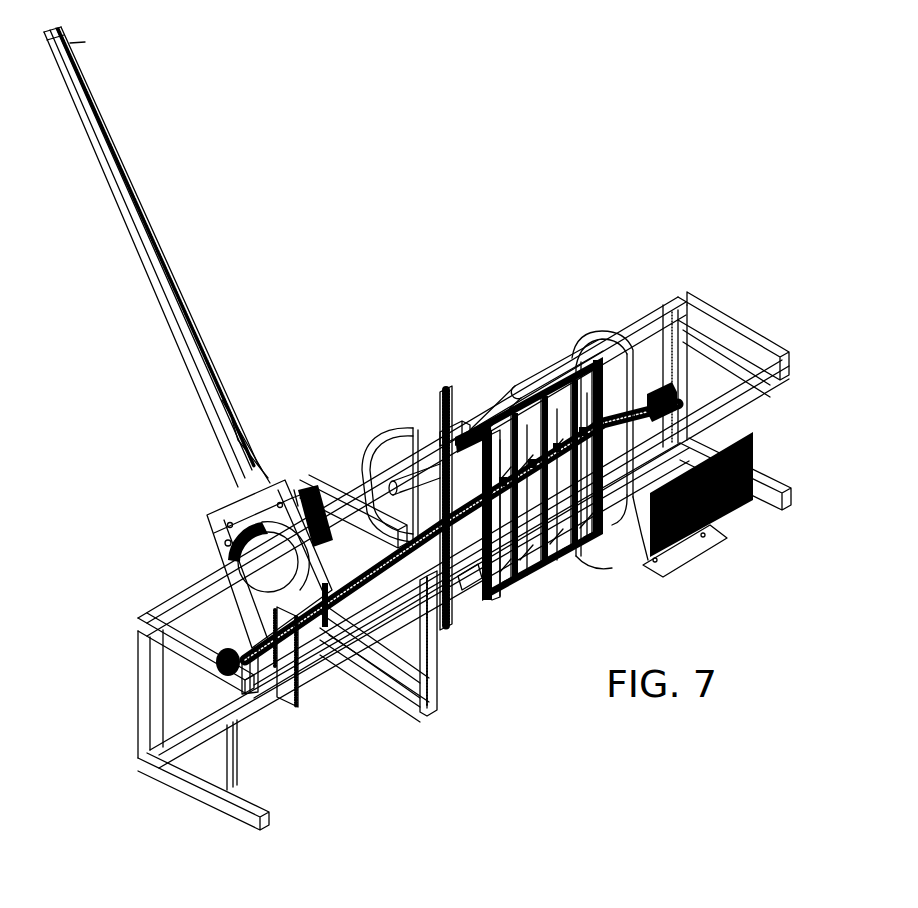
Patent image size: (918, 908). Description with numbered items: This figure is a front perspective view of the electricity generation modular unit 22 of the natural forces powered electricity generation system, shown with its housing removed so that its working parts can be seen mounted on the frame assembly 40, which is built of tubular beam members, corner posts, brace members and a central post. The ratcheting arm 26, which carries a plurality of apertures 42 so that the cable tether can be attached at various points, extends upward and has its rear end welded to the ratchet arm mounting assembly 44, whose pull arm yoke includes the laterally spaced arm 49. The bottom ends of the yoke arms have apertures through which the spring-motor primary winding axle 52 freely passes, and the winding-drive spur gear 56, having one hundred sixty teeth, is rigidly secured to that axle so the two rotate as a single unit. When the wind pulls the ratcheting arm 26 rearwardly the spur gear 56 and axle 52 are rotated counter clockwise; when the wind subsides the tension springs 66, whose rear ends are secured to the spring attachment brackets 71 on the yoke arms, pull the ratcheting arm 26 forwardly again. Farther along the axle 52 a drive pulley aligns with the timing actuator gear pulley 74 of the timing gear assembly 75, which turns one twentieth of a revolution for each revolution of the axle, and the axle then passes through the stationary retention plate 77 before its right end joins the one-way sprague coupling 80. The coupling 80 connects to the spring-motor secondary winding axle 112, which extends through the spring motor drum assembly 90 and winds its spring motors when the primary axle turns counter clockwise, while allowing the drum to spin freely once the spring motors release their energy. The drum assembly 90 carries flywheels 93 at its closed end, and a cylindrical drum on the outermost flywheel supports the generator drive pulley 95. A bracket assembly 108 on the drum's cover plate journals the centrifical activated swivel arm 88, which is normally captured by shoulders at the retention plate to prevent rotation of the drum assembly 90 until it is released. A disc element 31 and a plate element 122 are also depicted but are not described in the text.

The electricity generation modular unit 22 is at (497, 155).
The ratcheting arm 26 is at (152, 244).
The disc 31 is at (210, 532).
The frame assembly 40 is at (752, 335).
The apertures 42 is at (70, 80).
The ratchet arm mounting assembly 44 is at (203, 512).
The arm 49 is at (252, 588).
The spring-motor primary winding axle 52 is at (240, 684).
The winding-drive spur gear 56 is at (297, 688).
The tension springs 66 is at (314, 500).
The spring attachment brackets 71 is at (295, 498).
The timing actuator gear pulley 74 is at (398, 476).
The timing gear assembly 75 is at (362, 432).
The stationary retention plate 77 is at (452, 625).
The one-way sprague coupling 80 is at (467, 588).
The centrifical activated swivel arm 88 is at (460, 425).
The spring motor drum assembly 90 is at (506, 372).
The flywheels 93 is at (567, 347).
The generator drive pulley 95 is at (593, 330).
The bracket assembly 108 is at (475, 423).
The spring-motor secondary winding axle 112 is at (682, 395).
The screen plate 122 is at (753, 452).